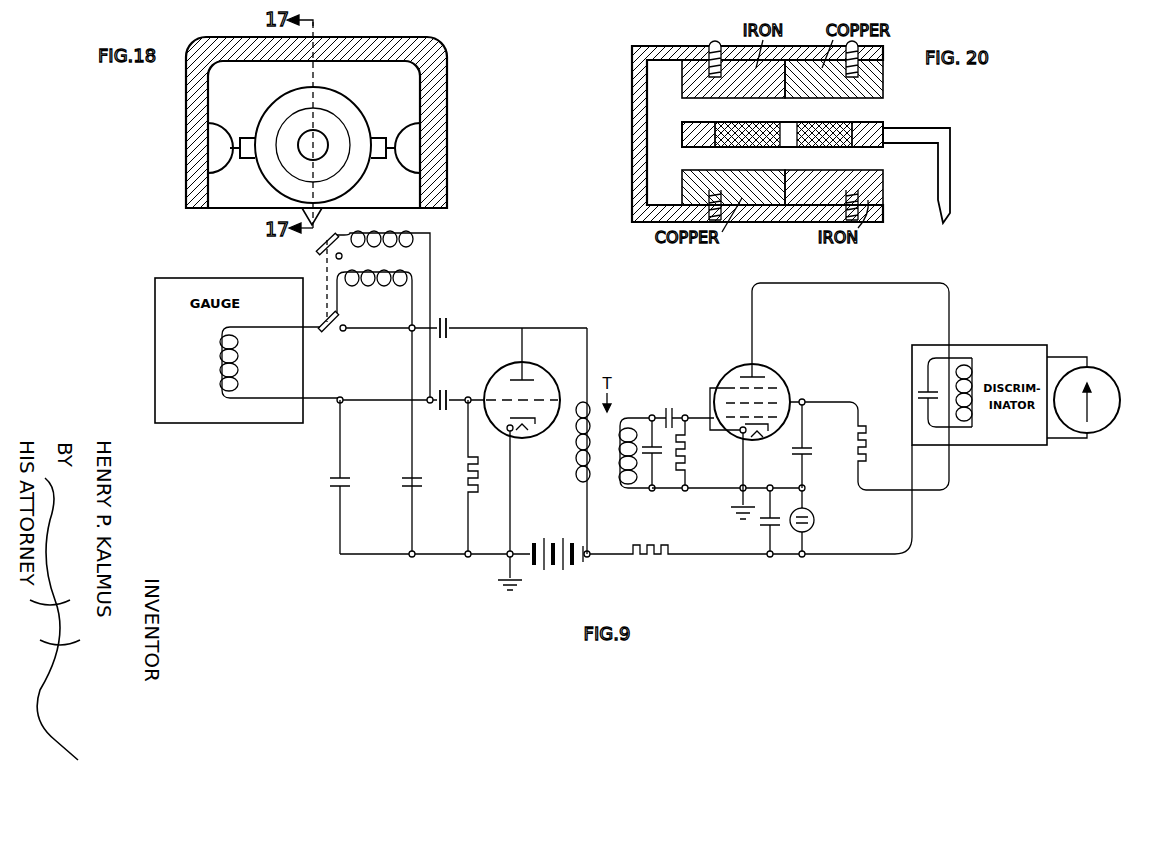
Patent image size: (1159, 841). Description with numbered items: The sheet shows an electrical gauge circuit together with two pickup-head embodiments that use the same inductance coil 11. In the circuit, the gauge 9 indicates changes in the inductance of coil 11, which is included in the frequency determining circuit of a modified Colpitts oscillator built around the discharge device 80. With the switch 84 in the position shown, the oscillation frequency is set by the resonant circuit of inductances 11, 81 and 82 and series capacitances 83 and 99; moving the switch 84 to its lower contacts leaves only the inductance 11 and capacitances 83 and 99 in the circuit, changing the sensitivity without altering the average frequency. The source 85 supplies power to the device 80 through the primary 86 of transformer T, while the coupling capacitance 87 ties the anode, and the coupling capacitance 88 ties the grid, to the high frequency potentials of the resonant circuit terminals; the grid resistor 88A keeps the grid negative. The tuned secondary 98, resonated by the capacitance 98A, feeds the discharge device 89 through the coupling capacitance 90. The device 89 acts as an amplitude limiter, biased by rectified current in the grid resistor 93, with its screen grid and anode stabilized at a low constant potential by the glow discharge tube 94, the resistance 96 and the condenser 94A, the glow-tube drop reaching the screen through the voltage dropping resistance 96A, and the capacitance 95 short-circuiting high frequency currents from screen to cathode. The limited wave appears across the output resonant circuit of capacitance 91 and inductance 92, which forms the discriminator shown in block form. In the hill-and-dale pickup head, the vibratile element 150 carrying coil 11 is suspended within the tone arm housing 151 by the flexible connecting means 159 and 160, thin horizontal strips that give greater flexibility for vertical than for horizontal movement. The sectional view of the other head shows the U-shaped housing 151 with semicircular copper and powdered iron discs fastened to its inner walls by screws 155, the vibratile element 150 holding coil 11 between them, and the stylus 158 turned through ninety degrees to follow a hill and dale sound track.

In FIG. 9, the gauge / indicating meter 9 is at (1110, 416).
In FIG. 18, the inductance coil 11 is at (333, 133).
In FIG. 20, the inductance coil 11 is at (845, 128).
In FIG. 9, the inductance coil 11 is at (218, 358).
In FIG. 9, the discharge device 80 is at (538, 384).
In FIG. 9, the inductance 81 is at (431, 240).
In FIG. 9, the inductance 82 is at (378, 273).
In FIG. 9, the series capacitance 83 is at (401, 479).
In FIG. 9, the switch 84 is at (323, 278).
In FIG. 9, the source of operating current 85 is at (553, 568).
In FIG. 9, the primary of transformer T 86 is at (582, 466).
In FIG. 9, the coupling capacitance 87 is at (450, 325).
In FIG. 9, the coupling capacitance 88 is at (451, 398).
In FIG. 9, the grid resistor 88A is at (461, 489).
In FIG. 9, the discharge device 89 is at (729, 380).
In FIG. 9, the coupling capacitance 90 is at (672, 408).
In FIG. 9, the capacitance 91 is at (912, 395).
In FIG. 9, the inductance 92 is at (968, 365).
In FIG. 9, the grid resistor 93 is at (693, 456).
In FIG. 9, the glow discharge tube 94 is at (814, 513).
In FIG. 9, the condenser 94A is at (760, 526).
In FIG. 9, the capacitance 95 is at (795, 450).
In FIG. 9, the resistance 96 is at (656, 560).
In FIG. 9, the voltage dropping resistance 96A is at (867, 456).
In FIG. 9, the secondary of transformer T 98 is at (632, 430).
In FIG. 9, the capacitance 98A is at (652, 490).
In FIG. 9, the series capacitance 99 is at (328, 483).
In FIG. 20, the vibratile element 150 is at (694, 128).
In FIG. 18, the tone arm head or housing 151 is at (357, 49).
In FIG. 20, the tone arm head or housing 151 is at (640, 92).
In FIG. 20, the screws 155 is at (711, 45).
In FIG. 18, the stylus 158 is at (317, 214).
In FIG. 20, the stylus 158 is at (951, 222).
In FIG. 18, the flexible connecting means / spring 159 is at (236, 141).
In FIG. 18, the flexible connecting means / spring 160 is at (394, 141).